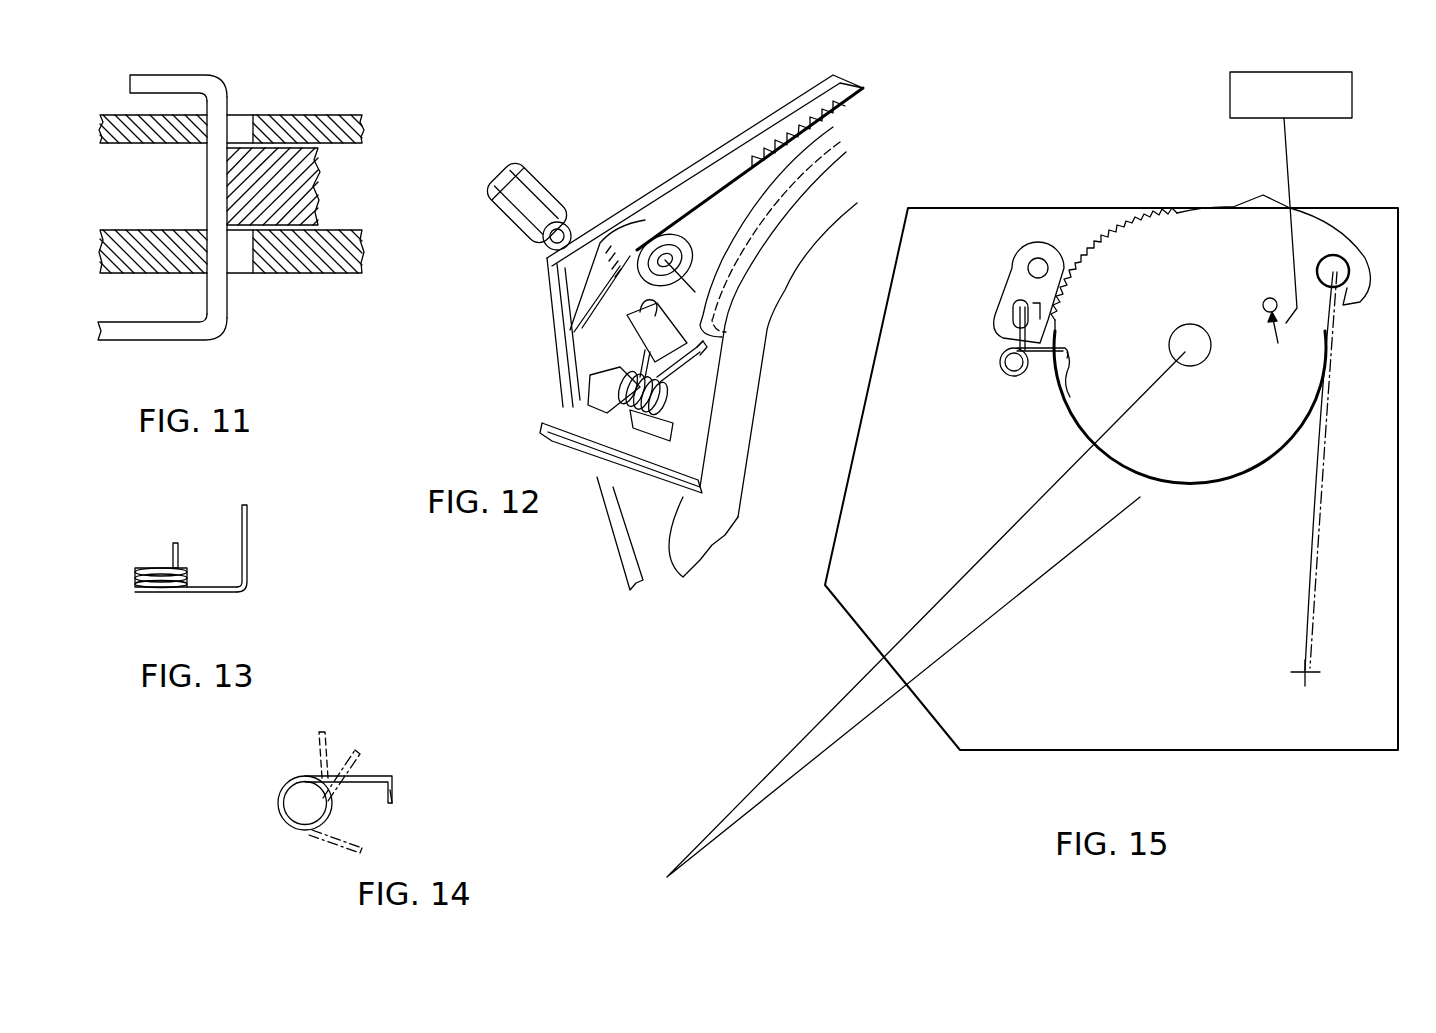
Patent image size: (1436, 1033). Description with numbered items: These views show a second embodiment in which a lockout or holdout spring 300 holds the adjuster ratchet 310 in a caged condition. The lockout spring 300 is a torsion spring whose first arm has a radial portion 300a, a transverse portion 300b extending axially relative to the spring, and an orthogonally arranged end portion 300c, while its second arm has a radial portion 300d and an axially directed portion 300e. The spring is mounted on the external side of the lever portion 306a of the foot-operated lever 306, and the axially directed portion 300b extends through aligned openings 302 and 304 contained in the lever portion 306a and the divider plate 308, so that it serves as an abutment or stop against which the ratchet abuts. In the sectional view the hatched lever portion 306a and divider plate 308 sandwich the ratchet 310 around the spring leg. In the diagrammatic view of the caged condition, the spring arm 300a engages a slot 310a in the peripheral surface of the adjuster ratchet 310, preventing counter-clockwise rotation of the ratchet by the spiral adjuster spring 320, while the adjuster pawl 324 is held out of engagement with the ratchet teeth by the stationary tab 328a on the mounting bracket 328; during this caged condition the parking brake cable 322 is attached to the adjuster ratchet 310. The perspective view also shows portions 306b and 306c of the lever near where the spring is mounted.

In FIG. 11, the lockout spring 300 is at (174, 209).
In FIG. 13, the lockout spring 300 is at (221, 567).
In FIG. 14, the lockout spring 300 is at (318, 788).
In FIG. 12, the lockout spring 300 is at (659, 388).
In FIG. 15, the lockout spring 300 is at (997, 368).
In FIG. 11, the radial portion 300a is at (208, 367).
In FIG. 13, the radial portion 300a is at (232, 597).
In FIG. 14, the radial portion 300a is at (367, 777).
In FIG. 12, the radial portion 300a is at (690, 380).
In FIG. 15, the radial portion 300a is at (1035, 375).
In FIG. 11, the transverse portion 300b is at (207, 183).
In FIG. 13, the transverse portion 300b is at (247, 530).
In FIG. 12, the transverse portion 300b is at (697, 342).
In FIG. 11, the end portion 300c is at (162, 77).
In FIG. 14, the end portion 300c is at (392, 792).
In FIG. 14, the radial portion 300d is at (318, 743).
In FIG. 12, the radial portion 300d is at (645, 352).
In FIG. 13, the axially directed portion 300e is at (202, 540).
In FIG. 11, the opening 302 is at (243, 257).
In FIG. 11, the opening 304 is at (242, 120).
In FIG. 15, the foot-operated lever 306 is at (785, 770).
In FIG. 11, the lever portion 306a is at (327, 257).
In FIG. 12, the lever portion 306a is at (697, 217).
In FIG. 12, the plate lower beam 306b is at (630, 428).
In FIG. 12, the plate clamp tab 306c is at (633, 323).
In FIG. 11, the divider plate 308 is at (305, 120).
In FIG. 12, the divider plate 308 is at (643, 208).
In FIG. 11, the adjuster ratchet 310 is at (302, 180).
In FIG. 12, the adjuster ratchet 310 is at (765, 132).
In FIG. 15, the adjuster ratchet 310 is at (1240, 442).
In FIG. 15, the slot 310a is at (1070, 360).
In FIG. 15, the spiral adjuster spring 320 is at (1230, 103).
In FIG. 15, the parking brake cable 322 is at (1297, 592).
In FIG. 15, the adjuster pawl 324 is at (1000, 300).
In FIG. 15, the mounting bracket 328 is at (990, 702).
In FIG. 15, the stationary tab 328a is at (1040, 313).